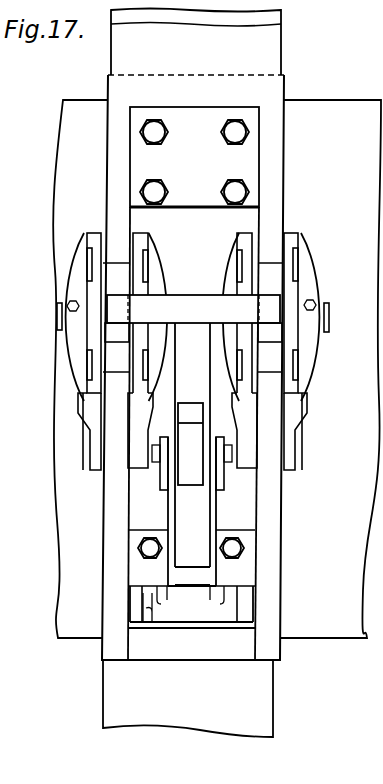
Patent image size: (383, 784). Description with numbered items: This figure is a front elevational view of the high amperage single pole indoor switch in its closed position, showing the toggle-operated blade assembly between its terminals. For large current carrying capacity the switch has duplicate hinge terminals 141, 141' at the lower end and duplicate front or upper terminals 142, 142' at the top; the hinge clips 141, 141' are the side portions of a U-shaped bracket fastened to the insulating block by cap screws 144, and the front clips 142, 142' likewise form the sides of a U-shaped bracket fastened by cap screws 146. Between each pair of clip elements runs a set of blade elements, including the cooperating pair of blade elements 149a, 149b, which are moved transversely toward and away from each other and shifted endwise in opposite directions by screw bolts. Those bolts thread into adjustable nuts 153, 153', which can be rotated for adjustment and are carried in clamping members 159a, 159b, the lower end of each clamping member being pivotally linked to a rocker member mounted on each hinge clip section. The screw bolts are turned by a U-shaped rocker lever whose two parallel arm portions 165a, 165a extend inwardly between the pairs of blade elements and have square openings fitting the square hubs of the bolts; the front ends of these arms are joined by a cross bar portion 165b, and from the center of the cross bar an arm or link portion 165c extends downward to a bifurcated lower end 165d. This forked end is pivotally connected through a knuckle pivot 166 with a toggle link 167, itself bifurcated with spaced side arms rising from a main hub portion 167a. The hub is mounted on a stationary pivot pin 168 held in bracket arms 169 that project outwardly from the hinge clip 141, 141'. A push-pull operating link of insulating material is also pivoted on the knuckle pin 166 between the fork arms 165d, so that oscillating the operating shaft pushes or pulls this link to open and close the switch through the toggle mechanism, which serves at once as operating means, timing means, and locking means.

The hinge terminal 141 is at (99, 516).
The hinge terminal 141' is at (290, 516).
The front terminal 142 is at (100, 278).
The front terminal 142' is at (294, 274).
The cap screw 144 is at (140, 547).
The cap screw 146 is at (229, 133).
The blade element 149a is at (95, 238).
The blade element 149b is at (248, 242).
The adjustable nut 153 is at (41, 315).
The adjustable nut 153' is at (335, 318).
The clamping member 159a is at (80, 243).
The clamping member 159b is at (233, 265).
The parallel arm portion 165a is at (113, 337).
The cross bar portion 165b is at (230, 307).
The link portion 165c is at (197, 310).
The bifurcated lower end 165d is at (208, 412).
The knuckle pivot 166 is at (157, 463).
The toggle link 167 is at (216, 524).
The main hub portion 167a is at (197, 615).
The stationary pivot pin 168 is at (153, 615).
The bracket arm 169 is at (133, 603).